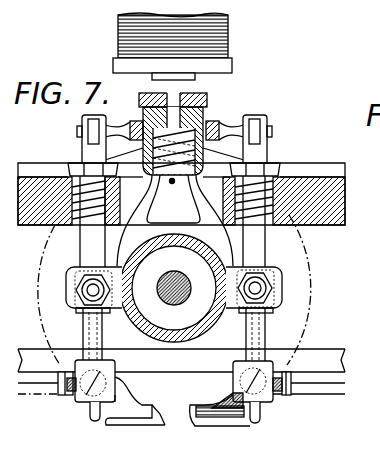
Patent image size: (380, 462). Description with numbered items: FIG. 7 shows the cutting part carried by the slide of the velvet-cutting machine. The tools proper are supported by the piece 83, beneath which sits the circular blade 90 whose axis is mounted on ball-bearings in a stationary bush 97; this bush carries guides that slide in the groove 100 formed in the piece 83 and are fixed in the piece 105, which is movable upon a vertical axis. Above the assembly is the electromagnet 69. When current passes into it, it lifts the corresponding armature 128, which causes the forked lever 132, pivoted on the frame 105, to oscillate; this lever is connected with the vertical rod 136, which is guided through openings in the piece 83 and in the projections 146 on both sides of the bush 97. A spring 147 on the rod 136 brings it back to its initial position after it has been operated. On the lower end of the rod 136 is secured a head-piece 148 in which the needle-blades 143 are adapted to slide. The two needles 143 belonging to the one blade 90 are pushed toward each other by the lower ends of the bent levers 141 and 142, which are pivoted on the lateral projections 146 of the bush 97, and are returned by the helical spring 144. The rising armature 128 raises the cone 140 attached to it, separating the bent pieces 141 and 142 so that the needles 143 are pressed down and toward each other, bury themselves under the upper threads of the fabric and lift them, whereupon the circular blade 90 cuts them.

The electromagnet 69 is at (230, 37).
The armature 128 is at (208, 97).
The forked lever 132 is at (136, 122).
The cone 140 is at (174, 186).
The vertical rod 136 is at (92, 247).
The piece 83 is at (328, 213).
The spring 147 is at (110, 213).
The stationary bush 97 is at (217, 258).
The groove 100 is at (176, 280).
The lateral projection 146 is at (72, 302).
The circular blade 90 is at (309, 298).
The head-piece 148 is at (113, 371).
The bent lever 142 is at (112, 262).
The bent lever 141 is at (252, 262).
The needle-blade 143 is at (127, 430).
The helical spring 144 is at (212, 392).
The piece 105 is at (333, 388).